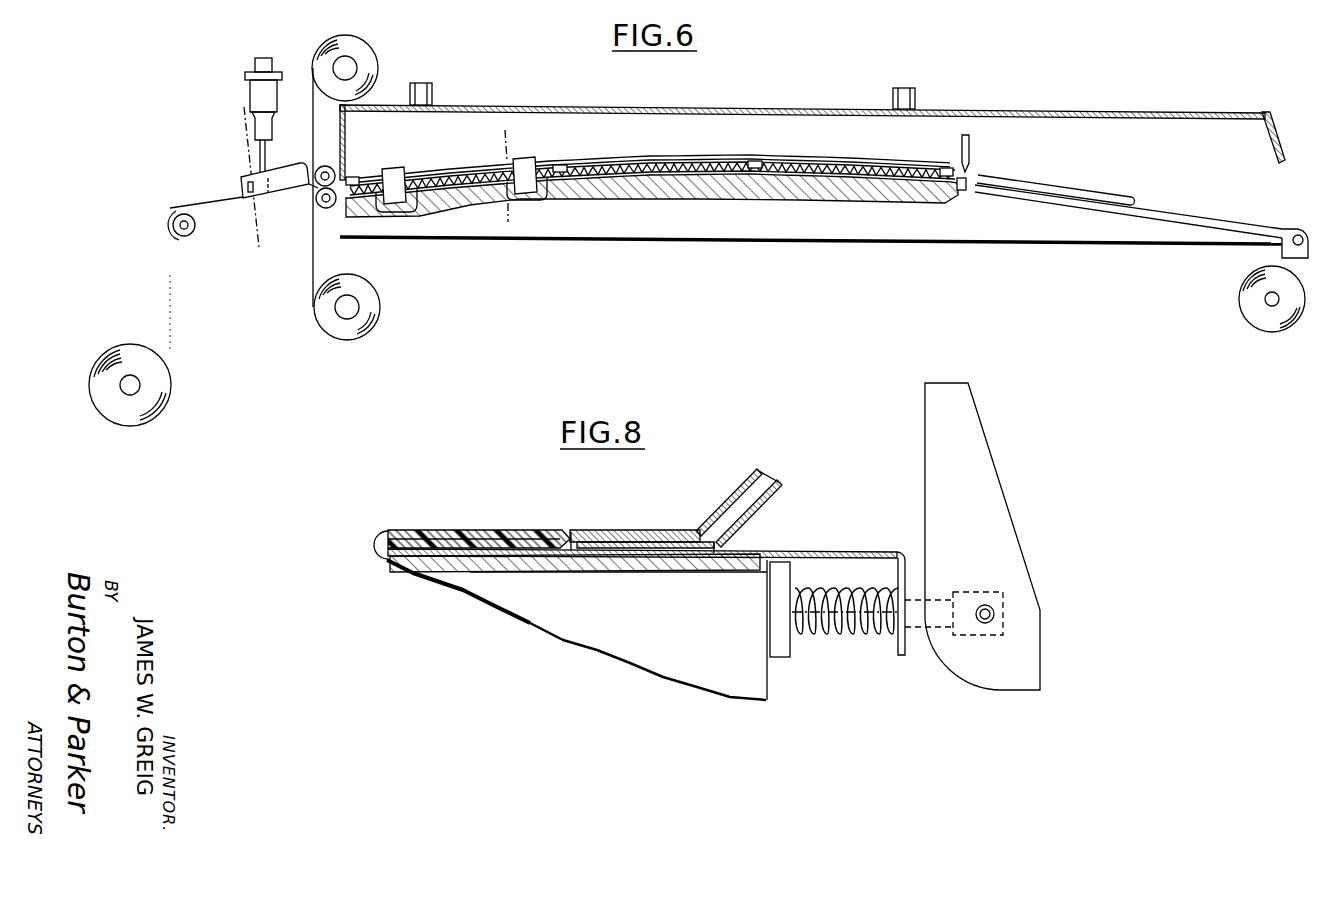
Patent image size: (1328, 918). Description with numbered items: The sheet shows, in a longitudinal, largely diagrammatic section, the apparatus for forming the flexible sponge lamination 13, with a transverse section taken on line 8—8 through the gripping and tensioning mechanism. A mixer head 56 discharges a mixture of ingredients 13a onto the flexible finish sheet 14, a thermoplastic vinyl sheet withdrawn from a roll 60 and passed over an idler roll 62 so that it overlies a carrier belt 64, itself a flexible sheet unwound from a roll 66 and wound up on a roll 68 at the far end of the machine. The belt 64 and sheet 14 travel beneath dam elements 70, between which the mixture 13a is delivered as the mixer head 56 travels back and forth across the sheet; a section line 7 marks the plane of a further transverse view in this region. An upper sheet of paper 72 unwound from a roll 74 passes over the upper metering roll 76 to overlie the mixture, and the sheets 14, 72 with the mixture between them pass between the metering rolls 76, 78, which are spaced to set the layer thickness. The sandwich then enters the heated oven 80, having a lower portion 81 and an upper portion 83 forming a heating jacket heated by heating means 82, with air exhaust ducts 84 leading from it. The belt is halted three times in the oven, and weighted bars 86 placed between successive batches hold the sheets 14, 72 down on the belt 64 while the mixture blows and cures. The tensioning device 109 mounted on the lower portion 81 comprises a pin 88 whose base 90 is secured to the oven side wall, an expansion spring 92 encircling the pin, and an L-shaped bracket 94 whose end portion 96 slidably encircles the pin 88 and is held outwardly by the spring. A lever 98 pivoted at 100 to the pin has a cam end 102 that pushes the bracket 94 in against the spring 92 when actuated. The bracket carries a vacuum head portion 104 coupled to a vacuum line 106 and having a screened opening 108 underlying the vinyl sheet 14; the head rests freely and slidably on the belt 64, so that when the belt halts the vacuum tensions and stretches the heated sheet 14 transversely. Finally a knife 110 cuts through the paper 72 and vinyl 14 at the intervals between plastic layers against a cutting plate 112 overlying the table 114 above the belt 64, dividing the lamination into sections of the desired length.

In FIG. 6, the section line 7- 7 is at (236, 114).
In FIG. 6, the section line 8— 8 is at (500, 137).
In FIG. 6, the flexible thermosetting sponge lamination 13 is at (1122, 194).
In FIG. 8, the flexible thermosetting sponge lamination 13 is at (490, 526).
In FIG. 6, the mixture of ingredients 13a is at (262, 152).
In FIG. 8, the mixture of ingredients 13a is at (390, 542).
In FIG. 6, the flexible finish sheet 14 is at (172, 273).
In FIG. 8, the flexible finish sheet 14 is at (391, 548).
In FIG. 6, the mixer head 56 is at (260, 90).
In FIG. 6, the roll 60 is at (118, 383).
In FIG. 6, the idler roll 62 is at (190, 236).
In FIG. 6, the carrier belt 64 is at (313, 262).
In FIG. 8, the carrier belt 64 is at (392, 562).
In FIG. 6, the roll 66 is at (363, 317).
In FIG. 6, the roll 68 is at (1264, 300).
In FIG. 6, the dam elements 70 is at (298, 192).
In FIG. 6, the upper sheet of paper 72 is at (312, 98).
In FIG. 8, the upper sheet of paper 72 is at (436, 530).
In FIG. 6, the roll 74 is at (370, 54).
In FIG. 6, the upper metering roll 76 is at (330, 168).
In FIG. 6, the lower metering roll 78 is at (328, 208).
In FIG. 6, the oven 80 is at (715, 87).
In FIG. 8, the oven 80 is at (723, 677).
In FIG. 6, the lower portion of oven 81 is at (750, 227).
In FIG. 8, the lower portion of oven 81 is at (668, 662).
In FIG. 6, the heating means 82 is at (448, 190).
In FIG. 6, the upper portion of oven 83 is at (793, 99).
In FIG. 6, the air exhaust ducts 84 is at (430, 96).
In FIG. 6, the weighted bars 86 is at (950, 168).
In FIG. 8, the pin 88 is at (918, 627).
In FIG. 8, the base 90 is at (777, 648).
In FIG. 8, the expansion spring 92 is at (823, 594).
In FIG. 8, the L-shaped bracket 94 is at (798, 552).
In FIG. 8, the end portion of bracket 96 is at (907, 582).
In FIG. 8, the lever 98 is at (1103, 621).
In FIG. 8, the pivot 100 is at (995, 609).
In FIG. 8, the cam end 102 is at (966, 688).
In FIG. 8, the vacuum head portion 104 is at (648, 546).
In FIG. 8, the vacuum line 106 is at (767, 481).
In FIG. 8, the screened opening 108 is at (597, 530).
In FIG. 6, the tensioning device 109 is at (397, 175).
In FIG. 8, the tensioning device 109 is at (740, 470).
In FIG. 6, the knife 110 is at (972, 153).
In FIG. 6, the cutting plate 112 is at (960, 190).
In FIG. 6, the table 114 is at (1034, 192).